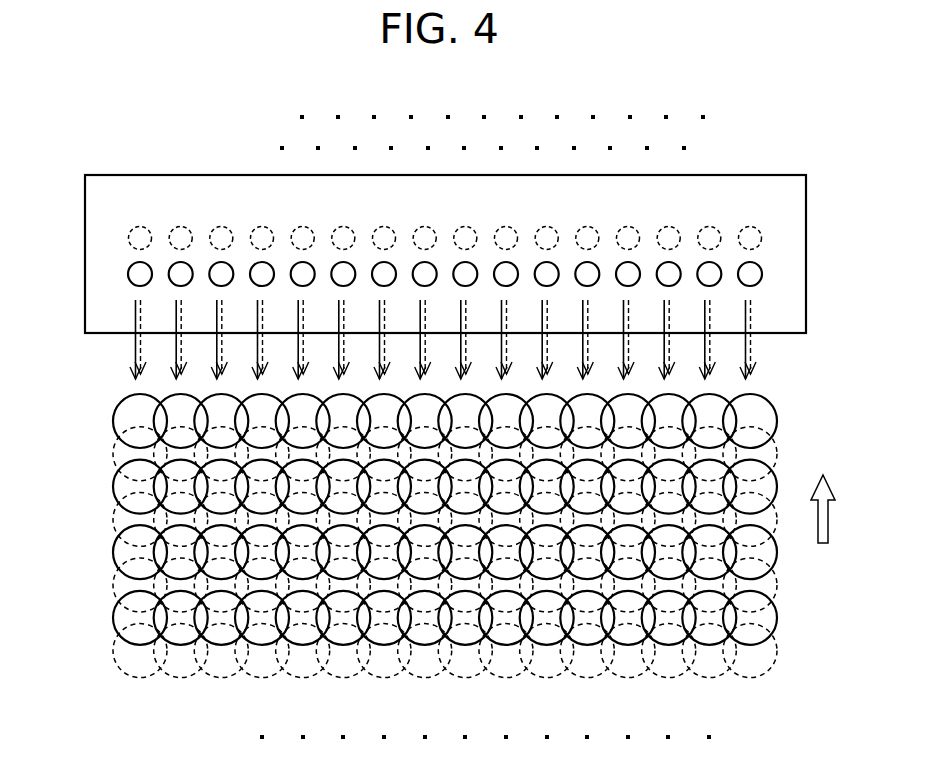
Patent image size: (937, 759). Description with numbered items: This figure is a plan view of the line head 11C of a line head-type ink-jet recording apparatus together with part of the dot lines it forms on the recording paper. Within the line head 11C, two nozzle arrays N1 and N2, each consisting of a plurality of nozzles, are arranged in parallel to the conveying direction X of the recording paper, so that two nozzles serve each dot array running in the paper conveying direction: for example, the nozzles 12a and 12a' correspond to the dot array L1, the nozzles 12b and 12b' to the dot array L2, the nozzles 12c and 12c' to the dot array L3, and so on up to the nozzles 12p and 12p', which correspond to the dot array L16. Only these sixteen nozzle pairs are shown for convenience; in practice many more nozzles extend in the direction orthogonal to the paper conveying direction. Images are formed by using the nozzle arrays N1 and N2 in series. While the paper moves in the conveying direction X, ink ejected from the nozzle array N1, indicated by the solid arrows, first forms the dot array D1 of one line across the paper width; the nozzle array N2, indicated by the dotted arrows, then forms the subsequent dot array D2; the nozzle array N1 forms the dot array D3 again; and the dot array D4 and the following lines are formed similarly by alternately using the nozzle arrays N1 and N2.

The line head 11C is at (790, 293).
The nozzle 12a is at (117, 212).
The nozzle 12b is at (173, 212).
The nozzle 12c is at (228, 212).
The nozzle 12p is at (733, 212).
The nozzle 12a' is at (141, 176).
The nozzle 12b' is at (200, 176).
The nozzle 12c' is at (247, 176).
The nozzle 12p' is at (755, 176).
The nozzle array N1 is at (382, 274).
The nozzle array N2 is at (382, 238).
The dot array D1 is at (410, 421).
The dot array D2 is at (410, 454).
The dot array D3 is at (410, 487).
The dot array D4 is at (410, 519).
The dot array L1 is at (141, 719).
The dot array L2 is at (181, 719).
The dot array L3 is at (221, 719).
The dot array L16 is at (753, 719).
The conveying direction X is at (823, 496).